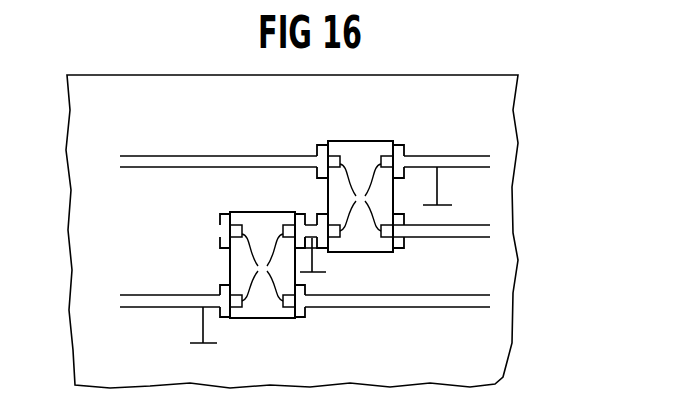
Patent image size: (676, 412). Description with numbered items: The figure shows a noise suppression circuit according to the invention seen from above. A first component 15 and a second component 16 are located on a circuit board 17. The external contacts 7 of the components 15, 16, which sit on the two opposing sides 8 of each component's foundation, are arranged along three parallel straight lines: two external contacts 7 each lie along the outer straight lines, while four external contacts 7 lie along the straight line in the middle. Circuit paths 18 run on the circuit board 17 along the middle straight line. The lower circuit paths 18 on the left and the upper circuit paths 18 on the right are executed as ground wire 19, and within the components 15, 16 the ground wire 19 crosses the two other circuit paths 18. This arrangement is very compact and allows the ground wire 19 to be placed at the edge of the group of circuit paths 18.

The external contact 7 is at (311, 232).
The side of the foundation 8 is at (297, 262).
The first component 15 is at (262, 318).
The second component 16 is at (365, 147).
The circuit board 17 is at (507, 270).
The circuit path 18 is at (145, 157).
The ground wire 19 is at (463, 157).